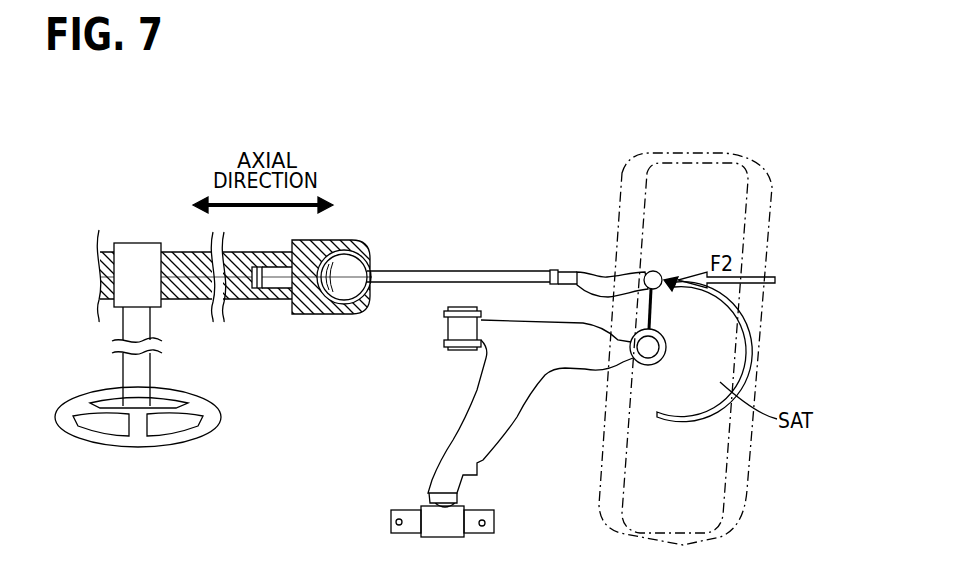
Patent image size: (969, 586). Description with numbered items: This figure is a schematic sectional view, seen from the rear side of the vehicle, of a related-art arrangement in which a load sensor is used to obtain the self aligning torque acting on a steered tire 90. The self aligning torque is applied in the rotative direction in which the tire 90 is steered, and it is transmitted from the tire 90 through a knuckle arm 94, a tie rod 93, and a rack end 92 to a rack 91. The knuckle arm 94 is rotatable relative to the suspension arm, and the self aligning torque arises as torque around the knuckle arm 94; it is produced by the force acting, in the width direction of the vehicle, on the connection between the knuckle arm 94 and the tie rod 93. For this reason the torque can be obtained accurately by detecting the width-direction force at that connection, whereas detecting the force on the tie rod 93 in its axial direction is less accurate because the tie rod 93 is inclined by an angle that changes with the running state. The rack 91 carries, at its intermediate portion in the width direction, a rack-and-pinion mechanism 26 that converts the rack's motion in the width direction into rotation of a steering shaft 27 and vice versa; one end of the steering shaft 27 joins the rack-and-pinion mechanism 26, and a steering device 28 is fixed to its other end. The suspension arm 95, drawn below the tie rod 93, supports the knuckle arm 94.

The rack-and-pinion mechanism 26 is at (138, 257).
The steering shaft 27 is at (130, 368).
The steering device 28 is at (212, 418).
The tire 90 is at (696, 466).
The rack 91 is at (248, 300).
The rack end 92 is at (330, 315).
The tie rod 93 is at (582, 272).
The knuckle arm 94 is at (654, 310).
The lower arm 95 is at (478, 417).